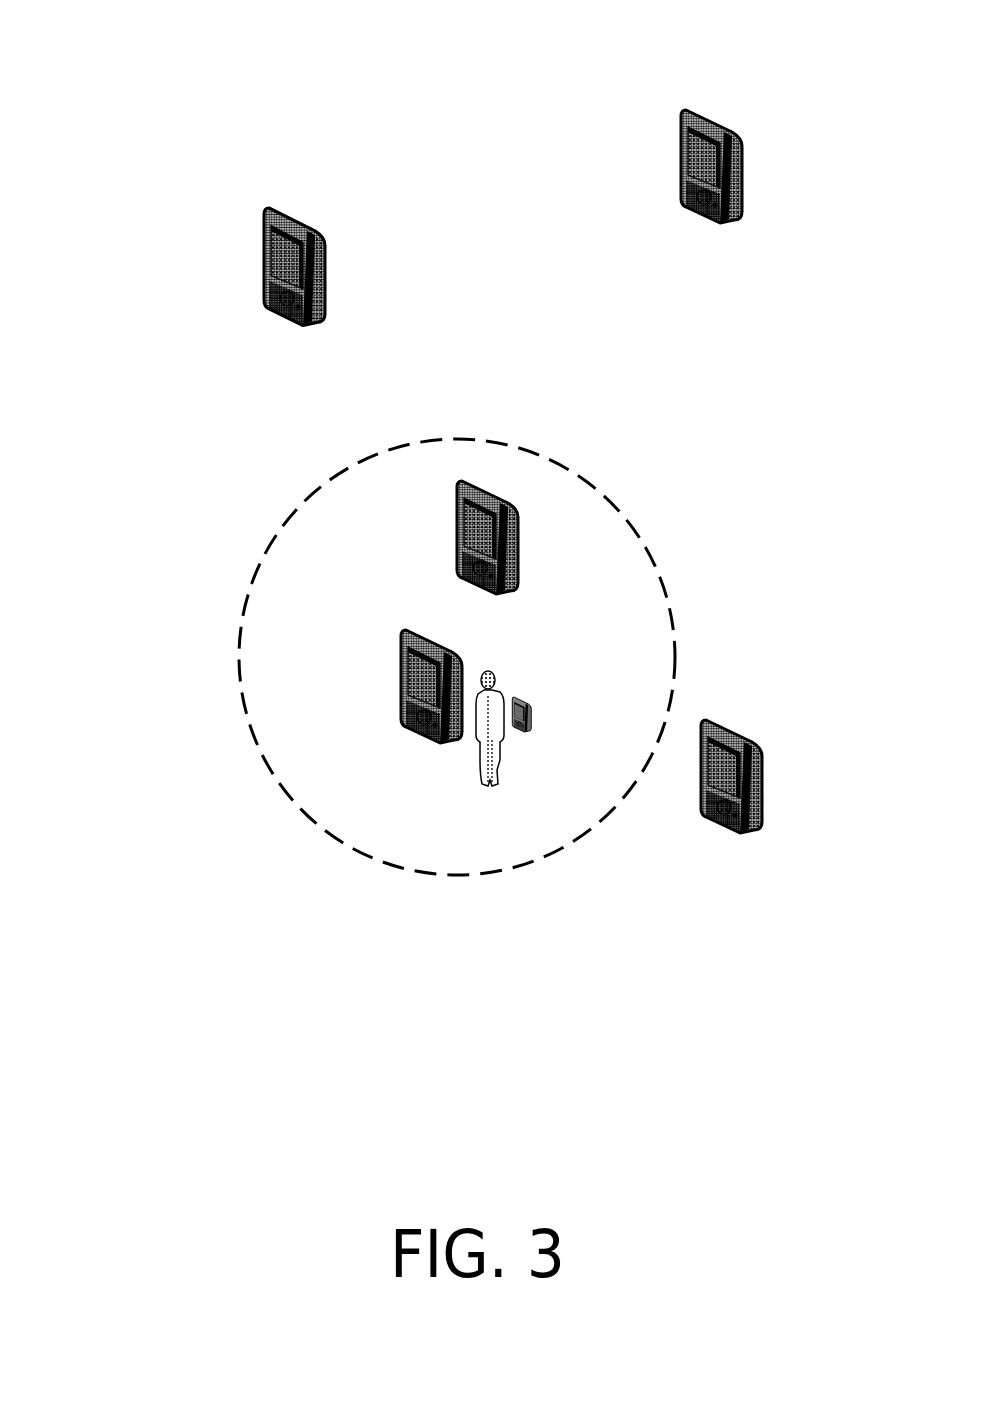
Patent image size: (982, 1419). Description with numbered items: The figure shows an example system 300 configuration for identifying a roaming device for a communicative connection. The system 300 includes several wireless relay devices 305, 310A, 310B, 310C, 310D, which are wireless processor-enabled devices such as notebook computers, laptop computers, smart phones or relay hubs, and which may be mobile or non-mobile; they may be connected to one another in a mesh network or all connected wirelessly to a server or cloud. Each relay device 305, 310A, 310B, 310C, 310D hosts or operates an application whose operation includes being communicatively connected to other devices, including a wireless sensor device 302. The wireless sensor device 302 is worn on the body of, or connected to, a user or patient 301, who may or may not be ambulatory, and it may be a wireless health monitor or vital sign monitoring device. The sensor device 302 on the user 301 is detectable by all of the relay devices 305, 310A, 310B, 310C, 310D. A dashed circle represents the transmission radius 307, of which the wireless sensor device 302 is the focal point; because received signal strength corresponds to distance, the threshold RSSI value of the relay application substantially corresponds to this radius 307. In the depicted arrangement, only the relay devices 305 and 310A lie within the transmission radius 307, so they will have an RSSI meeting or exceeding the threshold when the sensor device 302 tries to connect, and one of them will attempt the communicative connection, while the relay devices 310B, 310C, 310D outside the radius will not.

The system 300 is at (112, 24).
The user 301 is at (504, 717).
The wireless sensor device 302 is at (540, 727).
The wireless relay device 305 is at (444, 683).
The transmission radius 307 is at (322, 478).
The wireless relay device 310A is at (500, 529).
The wireless relay device 310B is at (744, 768).
The wireless relay device 310C is at (307, 261).
The wireless relay device 310D is at (724, 158).